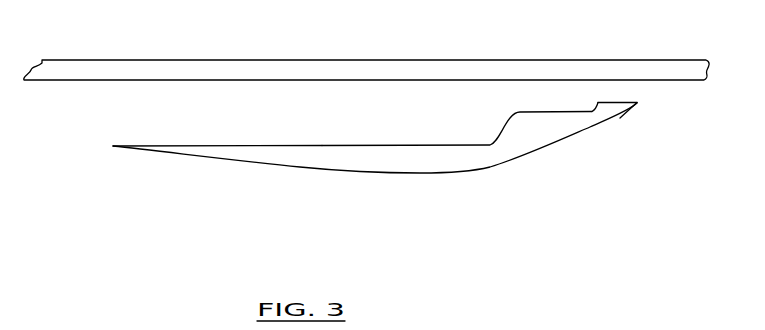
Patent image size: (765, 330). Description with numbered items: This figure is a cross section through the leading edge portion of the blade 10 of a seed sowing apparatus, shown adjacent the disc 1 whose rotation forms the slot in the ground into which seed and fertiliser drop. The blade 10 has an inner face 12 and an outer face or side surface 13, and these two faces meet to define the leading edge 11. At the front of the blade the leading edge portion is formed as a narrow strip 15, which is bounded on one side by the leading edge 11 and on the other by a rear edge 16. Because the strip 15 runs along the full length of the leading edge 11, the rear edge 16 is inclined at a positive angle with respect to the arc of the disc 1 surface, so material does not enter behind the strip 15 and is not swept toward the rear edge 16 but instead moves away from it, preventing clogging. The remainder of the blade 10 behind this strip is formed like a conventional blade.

The disc 1 is at (125, 67).
The blade 10 is at (322, 145).
The leading edge 11 is at (645, 105).
The inner face 12 is at (417, 145).
The outer face or side surface 13 is at (440, 173).
The narrow strip 15 is at (618, 102).
The rear edge 16 is at (597, 102).